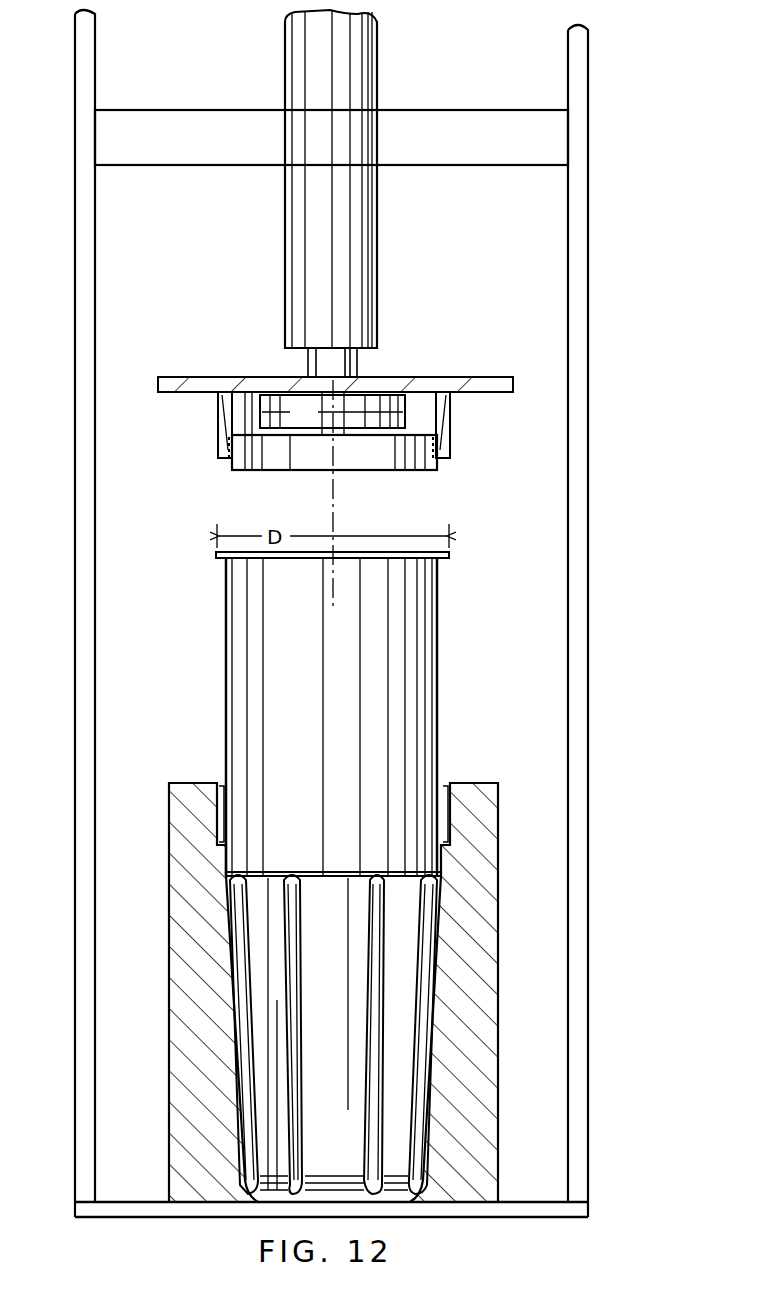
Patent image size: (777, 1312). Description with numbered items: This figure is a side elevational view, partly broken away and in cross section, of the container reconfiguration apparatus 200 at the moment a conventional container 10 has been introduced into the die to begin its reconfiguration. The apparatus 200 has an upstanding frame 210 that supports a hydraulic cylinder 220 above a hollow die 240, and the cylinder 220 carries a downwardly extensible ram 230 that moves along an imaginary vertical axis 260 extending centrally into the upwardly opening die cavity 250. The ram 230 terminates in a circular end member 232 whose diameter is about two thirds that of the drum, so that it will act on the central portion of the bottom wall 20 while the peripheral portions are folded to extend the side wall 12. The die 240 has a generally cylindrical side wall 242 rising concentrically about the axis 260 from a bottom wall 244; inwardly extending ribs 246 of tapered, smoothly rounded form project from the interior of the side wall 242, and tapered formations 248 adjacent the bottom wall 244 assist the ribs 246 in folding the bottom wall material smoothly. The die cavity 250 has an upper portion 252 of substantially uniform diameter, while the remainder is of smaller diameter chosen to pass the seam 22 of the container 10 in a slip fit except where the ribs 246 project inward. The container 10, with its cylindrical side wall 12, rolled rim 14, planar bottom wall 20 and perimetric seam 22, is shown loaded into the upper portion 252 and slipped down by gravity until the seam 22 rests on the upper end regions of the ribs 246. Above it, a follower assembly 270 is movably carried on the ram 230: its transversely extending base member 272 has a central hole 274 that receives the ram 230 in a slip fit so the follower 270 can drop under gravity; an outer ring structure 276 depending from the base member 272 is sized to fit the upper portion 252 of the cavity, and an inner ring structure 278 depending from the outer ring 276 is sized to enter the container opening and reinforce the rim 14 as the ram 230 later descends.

The container 10 is at (435, 622).
The side wall 12 is at (428, 692).
The rolled rim 14 is at (288, 565).
The bottom wall 20 is at (313, 882).
The seam 22 is at (266, 872).
The apparatus 200 is at (622, 68).
The frame 210 is at (568, 186).
The hydraulic cylinder 220 is at (372, 278).
The ram 230 is at (360, 365).
The end member 232 is at (328, 472).
The die 240 is at (480, 780).
The side wall of die 242 is at (490, 880).
The bottom wall of die 244 is at (550, 1178).
The ribs 246 is at (300, 1038).
The tapered formations 248 is at (330, 1196).
The die cavity 250 is at (222, 782).
The upper portion of die cavity 252 is at (224, 812).
The axis 260 is at (338, 488).
The follower assembly 270 is at (466, 378).
The base member 272 is at (195, 372).
The hole 274 is at (310, 380).
The outer ring structure 276 is at (218, 424).
The inner ring structure 278 is at (230, 462).